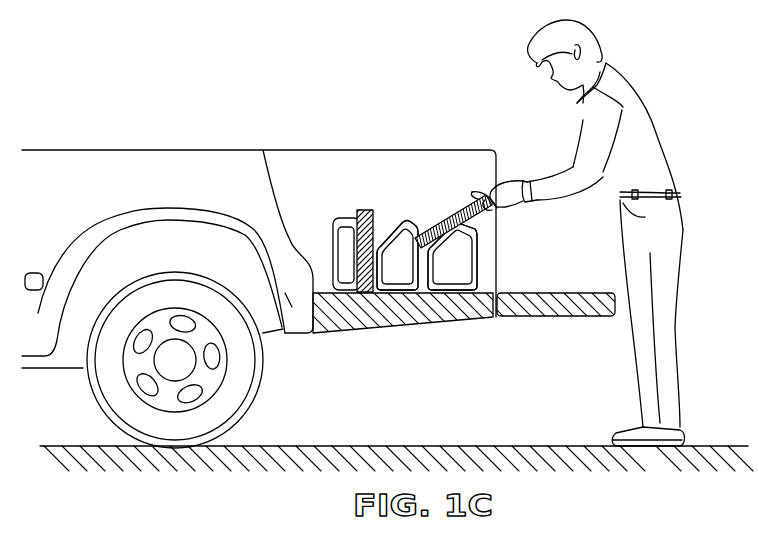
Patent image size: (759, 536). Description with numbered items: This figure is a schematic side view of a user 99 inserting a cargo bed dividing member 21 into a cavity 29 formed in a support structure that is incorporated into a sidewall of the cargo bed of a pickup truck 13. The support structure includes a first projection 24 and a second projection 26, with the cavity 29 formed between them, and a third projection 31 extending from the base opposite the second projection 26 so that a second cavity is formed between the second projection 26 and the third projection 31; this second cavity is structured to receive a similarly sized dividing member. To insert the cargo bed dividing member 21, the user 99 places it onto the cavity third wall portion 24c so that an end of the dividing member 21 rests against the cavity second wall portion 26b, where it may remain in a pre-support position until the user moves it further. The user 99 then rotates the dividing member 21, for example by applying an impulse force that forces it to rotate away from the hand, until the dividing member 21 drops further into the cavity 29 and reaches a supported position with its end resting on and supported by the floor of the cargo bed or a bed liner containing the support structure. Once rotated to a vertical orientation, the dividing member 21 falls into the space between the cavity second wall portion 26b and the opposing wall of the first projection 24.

The pickup truck 13 is at (102, 150).
The cargo bed dividing member 21 is at (448, 212).
The first projection 24 is at (457, 290).
The cavity third wall portion 24c is at (438, 240).
The second projection 26 is at (400, 290).
The cavity second wall portion 26b is at (417, 252).
The cavity 29 is at (422, 291).
The third projection 31 is at (364, 293).
The user 99 is at (647, 100).